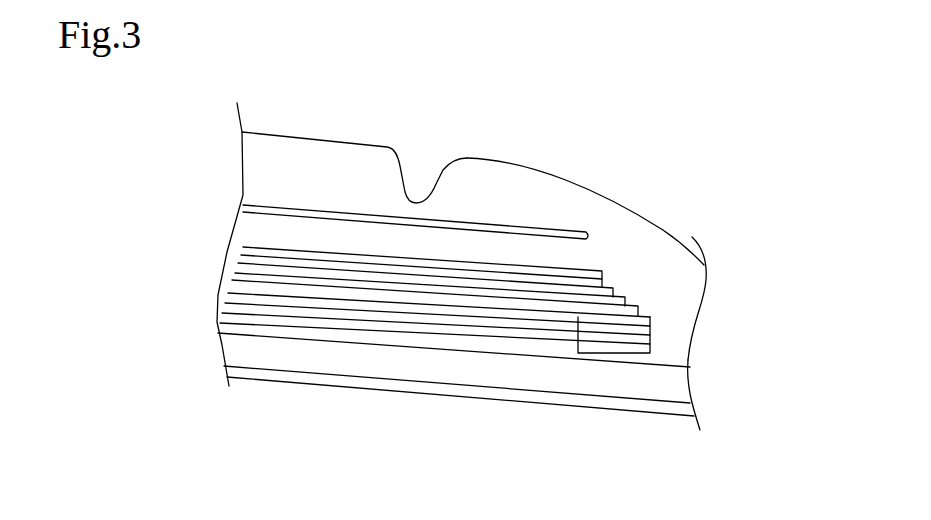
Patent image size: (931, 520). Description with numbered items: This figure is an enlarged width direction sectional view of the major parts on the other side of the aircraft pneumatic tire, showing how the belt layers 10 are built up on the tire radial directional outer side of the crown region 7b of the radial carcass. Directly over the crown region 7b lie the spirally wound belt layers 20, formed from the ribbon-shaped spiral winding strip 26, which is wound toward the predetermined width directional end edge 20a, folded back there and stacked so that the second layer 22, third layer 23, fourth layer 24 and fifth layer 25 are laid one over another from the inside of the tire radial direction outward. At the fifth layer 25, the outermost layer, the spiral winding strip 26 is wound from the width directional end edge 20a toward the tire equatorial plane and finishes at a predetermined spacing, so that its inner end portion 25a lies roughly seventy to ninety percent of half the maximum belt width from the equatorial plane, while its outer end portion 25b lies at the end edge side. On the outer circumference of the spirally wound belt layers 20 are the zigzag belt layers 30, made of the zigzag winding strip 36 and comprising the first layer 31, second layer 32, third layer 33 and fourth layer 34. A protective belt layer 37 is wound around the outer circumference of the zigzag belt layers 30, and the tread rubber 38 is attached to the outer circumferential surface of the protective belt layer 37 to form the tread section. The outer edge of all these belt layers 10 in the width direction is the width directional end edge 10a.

The belt layer 10 is at (105, 130).
The width directional end edge 10a is at (650, 330).
The spirally wound belt layer 20 is at (163, 303).
The width directional end edge 20a is at (650, 345).
The second layer 22 is at (213, 323).
The third layer 23 is at (215, 310).
The fourth layer 24 is at (215, 298).
The fifth layer 25 is at (578, 353).
The inner end portion 25a is at (517, 310).
The outer end portion 25b is at (650, 318).
The spiral winding strip 26 is at (410, 340).
The zigzag belt layer 30 is at (163, 182).
The first layer 31 is at (218, 274).
The second layer 32 is at (222, 267).
The third layer 33 is at (227, 248).
The fourth layer 34 is at (233, 208).
The zigzag winding strip 36 is at (448, 262).
The protective belt layer 37 is at (228, 207).
The tread rubber 38 is at (337, 148).
The crown region 7b is at (343, 358).